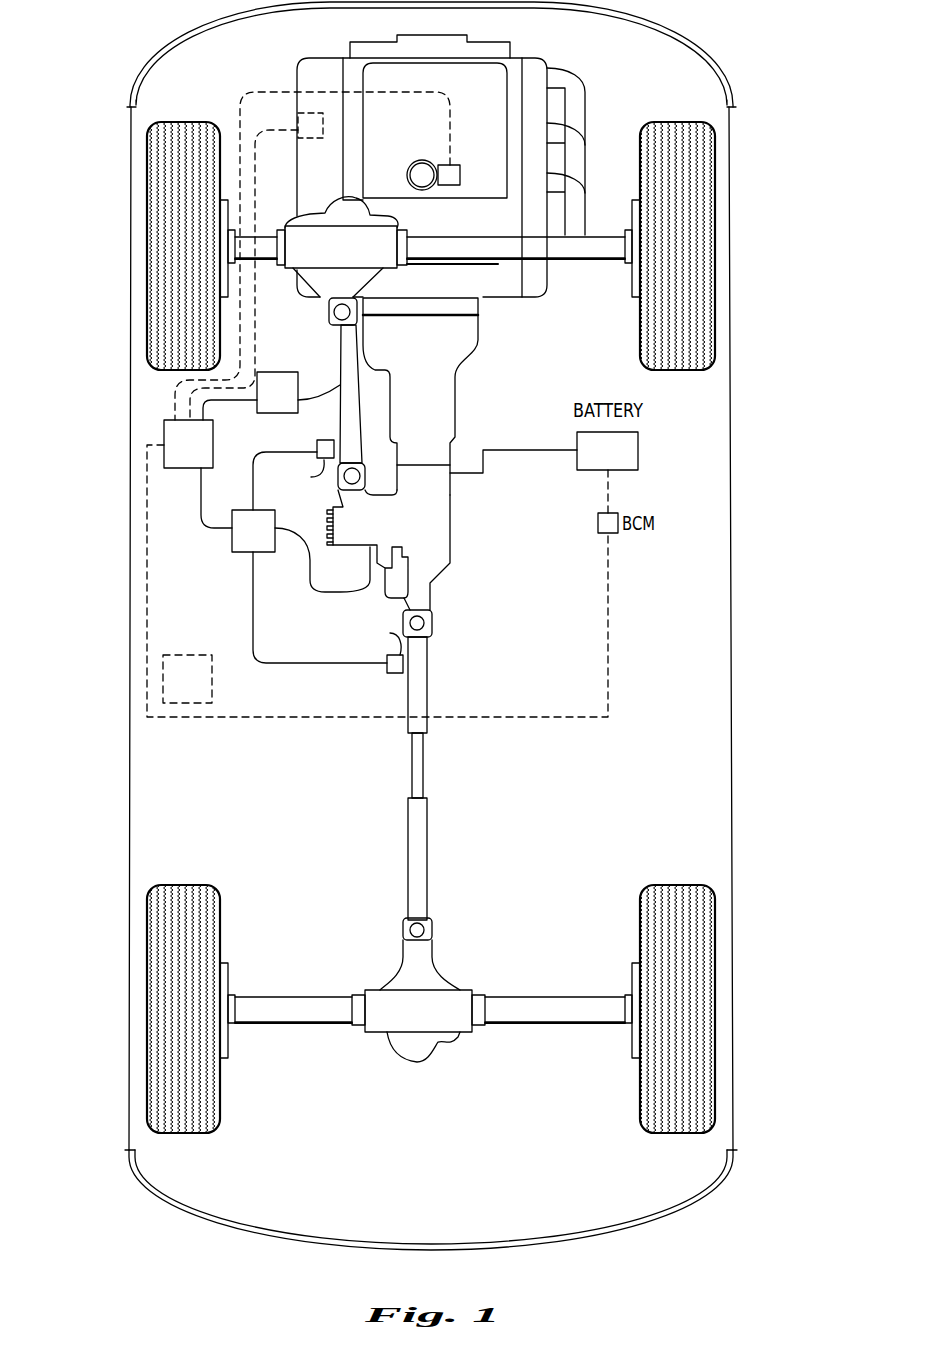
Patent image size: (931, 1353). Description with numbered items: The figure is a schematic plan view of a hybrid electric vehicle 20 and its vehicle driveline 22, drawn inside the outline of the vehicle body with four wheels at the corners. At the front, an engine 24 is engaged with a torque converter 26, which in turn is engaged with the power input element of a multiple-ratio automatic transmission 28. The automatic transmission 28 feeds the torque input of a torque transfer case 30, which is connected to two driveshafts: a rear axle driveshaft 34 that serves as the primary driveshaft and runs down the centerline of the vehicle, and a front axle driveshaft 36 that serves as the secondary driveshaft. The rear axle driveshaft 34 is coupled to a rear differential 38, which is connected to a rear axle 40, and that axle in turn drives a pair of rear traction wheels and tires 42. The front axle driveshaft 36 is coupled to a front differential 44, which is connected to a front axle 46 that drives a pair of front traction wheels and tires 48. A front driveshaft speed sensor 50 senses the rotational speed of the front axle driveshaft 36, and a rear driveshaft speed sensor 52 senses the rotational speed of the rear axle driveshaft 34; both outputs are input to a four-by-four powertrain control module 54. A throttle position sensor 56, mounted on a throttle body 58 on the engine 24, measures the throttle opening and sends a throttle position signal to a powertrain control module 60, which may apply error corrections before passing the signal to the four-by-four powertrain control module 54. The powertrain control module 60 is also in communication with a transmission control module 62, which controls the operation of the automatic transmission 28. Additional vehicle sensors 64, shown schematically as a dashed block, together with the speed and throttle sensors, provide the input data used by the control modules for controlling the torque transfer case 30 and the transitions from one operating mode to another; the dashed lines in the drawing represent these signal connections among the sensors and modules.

The hybrid electric vehicle 20 is at (746, 406).
The vehicle driveline 22 is at (433, 463).
The engine 24 is at (553, 97).
The torque converter 26 is at (480, 310).
The automatic transmission 28 is at (450, 403).
The torque transfer case 30 is at (465, 505).
The rear axle driveshaft 34 is at (428, 705).
The front axle driveshaft 36 is at (338, 352).
The rear differential 38 is at (417, 1053).
The rear axle 40 is at (552, 1002).
The rear traction wheels and tires 42 is at (147, 986).
The front differential 44 is at (347, 208).
The front axle 46 is at (573, 235).
The front traction wheels and tires 48 is at (147, 198).
The front driveshaft speed sensor 50 is at (322, 440).
The rear driveshaft speed sensor 52 is at (398, 673).
The 4x4 powertrain control module 54 is at (247, 552).
The throttle position sensor 56 is at (462, 178).
The throttle body 58 is at (425, 157).
The powertrain control module 60 is at (213, 450).
The transmission control module 62 is at (283, 415).
The vehicle sensors 64 is at (190, 703).